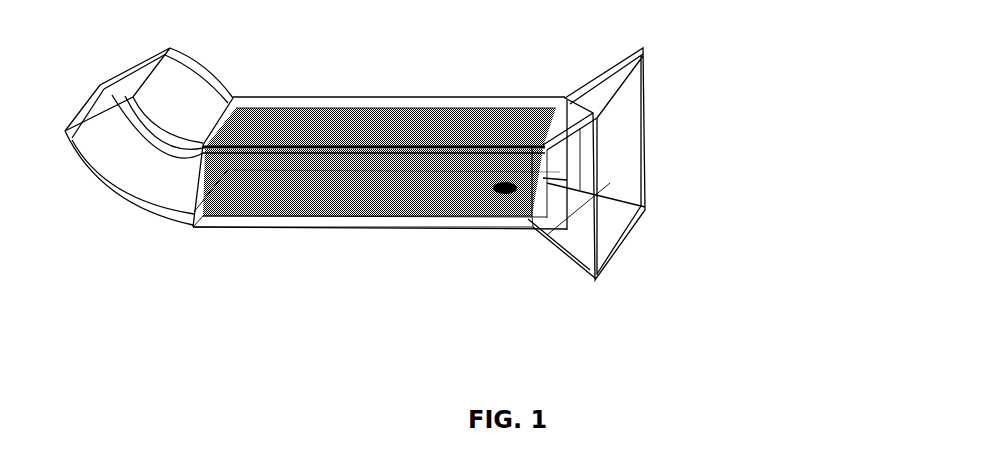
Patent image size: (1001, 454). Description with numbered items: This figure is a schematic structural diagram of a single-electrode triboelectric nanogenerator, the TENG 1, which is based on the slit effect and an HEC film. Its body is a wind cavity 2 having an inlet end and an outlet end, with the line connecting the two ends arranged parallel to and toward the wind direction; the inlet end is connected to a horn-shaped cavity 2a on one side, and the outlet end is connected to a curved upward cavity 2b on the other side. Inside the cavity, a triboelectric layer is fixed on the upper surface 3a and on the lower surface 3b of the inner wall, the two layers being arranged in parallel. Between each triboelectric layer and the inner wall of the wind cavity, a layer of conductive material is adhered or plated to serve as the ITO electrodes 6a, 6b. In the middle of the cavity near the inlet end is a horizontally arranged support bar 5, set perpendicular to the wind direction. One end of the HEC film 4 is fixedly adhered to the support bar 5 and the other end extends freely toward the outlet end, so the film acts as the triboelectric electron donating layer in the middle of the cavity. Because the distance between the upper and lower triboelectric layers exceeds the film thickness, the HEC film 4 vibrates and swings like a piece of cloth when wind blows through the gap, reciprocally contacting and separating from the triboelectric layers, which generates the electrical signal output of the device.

The TENG 1 is at (442, 191).
The wind cavity 2 is at (318, 228).
The horn-shaped cavity 2a is at (593, 88).
The curved upward cavity 2b is at (175, 88).
The upper surface 3a is at (293, 153).
The lower surface 3b is at (350, 202).
The HEC film 4 is at (460, 165).
The support bar 5 is at (507, 188).
The ITO electrode 6a is at (466, 128).
The ITO electrode 6b is at (500, 213).